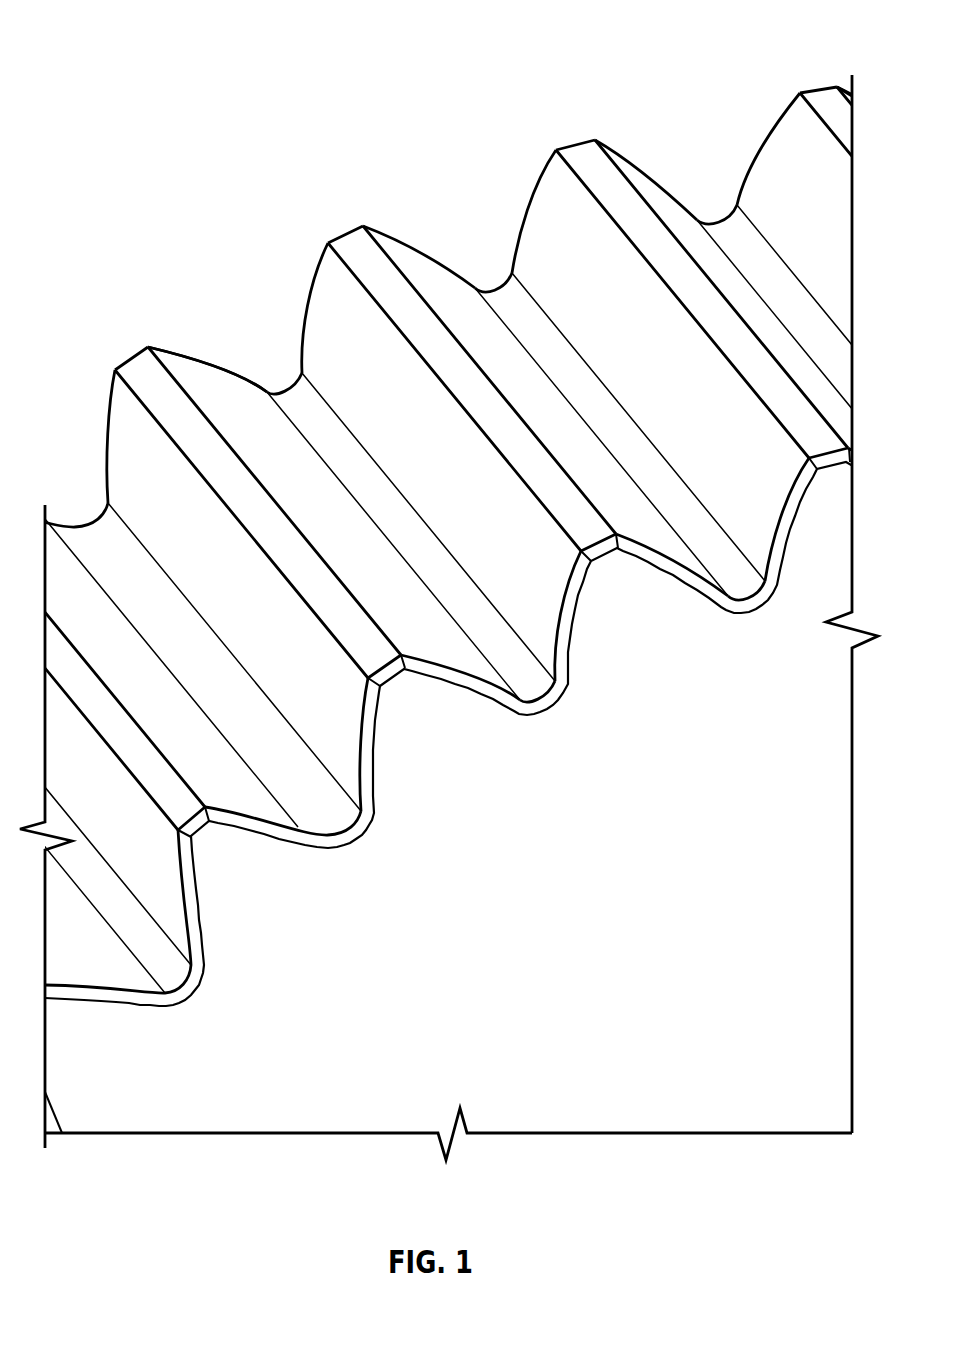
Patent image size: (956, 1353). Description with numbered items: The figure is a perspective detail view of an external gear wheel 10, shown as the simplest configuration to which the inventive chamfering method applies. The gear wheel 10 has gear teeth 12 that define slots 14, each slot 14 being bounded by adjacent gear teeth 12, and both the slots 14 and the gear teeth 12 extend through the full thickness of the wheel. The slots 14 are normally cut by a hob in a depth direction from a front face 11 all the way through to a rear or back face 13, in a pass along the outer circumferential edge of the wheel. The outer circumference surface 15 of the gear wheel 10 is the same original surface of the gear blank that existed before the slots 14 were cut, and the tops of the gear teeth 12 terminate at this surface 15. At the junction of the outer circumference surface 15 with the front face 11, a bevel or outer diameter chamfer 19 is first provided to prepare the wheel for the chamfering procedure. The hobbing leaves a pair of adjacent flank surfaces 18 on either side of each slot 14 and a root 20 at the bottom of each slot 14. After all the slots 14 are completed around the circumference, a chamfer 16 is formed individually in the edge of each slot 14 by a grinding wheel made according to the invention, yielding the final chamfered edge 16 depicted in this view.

The external gear wheel 10 is at (158, 235).
The front face 11 is at (449, 617).
The gear teeth 12 is at (622, 563).
The back face 13 is at (819, 89).
The slots 14 is at (259, 347).
The outer circumference surface 15 is at (142, 372).
The chamfer 16 is at (570, 627).
The flank surfaces 18 is at (57, 533).
The outer diameter chamfer 19 is at (198, 820).
The root 20 is at (318, 415).